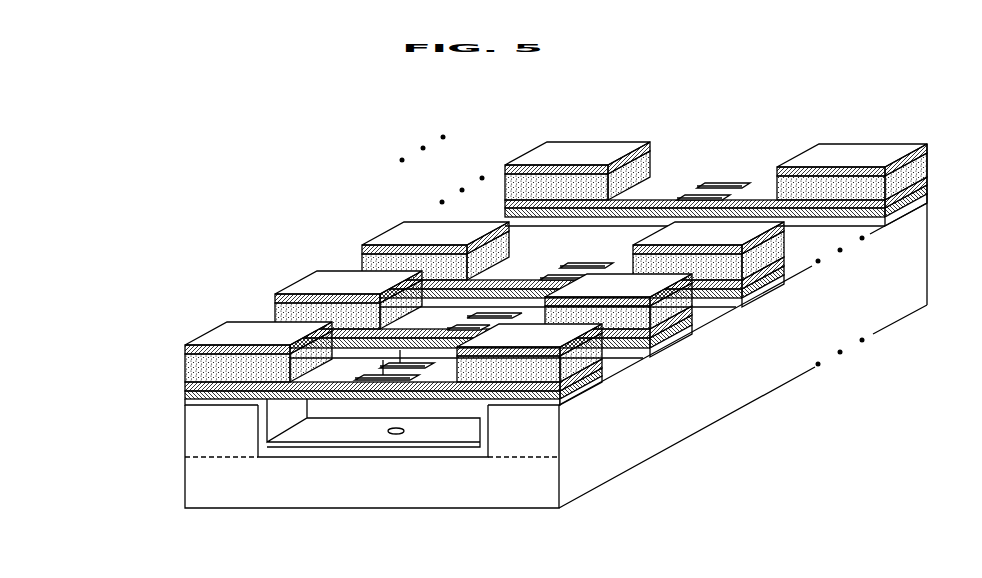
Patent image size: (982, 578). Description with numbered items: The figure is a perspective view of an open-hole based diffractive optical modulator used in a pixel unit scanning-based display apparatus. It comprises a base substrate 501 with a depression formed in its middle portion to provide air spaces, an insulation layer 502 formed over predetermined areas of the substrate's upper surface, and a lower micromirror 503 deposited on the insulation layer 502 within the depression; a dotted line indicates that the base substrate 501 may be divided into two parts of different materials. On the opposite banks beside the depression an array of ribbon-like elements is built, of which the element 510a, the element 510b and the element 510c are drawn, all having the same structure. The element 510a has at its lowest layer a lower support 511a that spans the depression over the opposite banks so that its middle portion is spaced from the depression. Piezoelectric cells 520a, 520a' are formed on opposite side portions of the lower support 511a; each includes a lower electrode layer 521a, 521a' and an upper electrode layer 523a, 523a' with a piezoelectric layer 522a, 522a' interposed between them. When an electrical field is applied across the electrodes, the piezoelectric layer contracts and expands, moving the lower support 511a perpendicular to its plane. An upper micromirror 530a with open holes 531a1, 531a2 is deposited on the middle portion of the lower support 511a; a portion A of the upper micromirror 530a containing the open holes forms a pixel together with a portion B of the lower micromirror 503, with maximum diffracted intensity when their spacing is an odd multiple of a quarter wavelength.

The base substrate 501 is at (556, 347).
The insulation layer 502 is at (425, 450).
The lower micromirror 503 is at (306, 447).
The element 510a is at (321, 352).
The element 510b is at (290, 282).
The element 510c is at (518, 163).
The lower support 511a is at (190, 395).
The piezoelectric cell 520a is at (221, 318).
The lower electrode layer 521a is at (342, 345).
The piezoelectric layer 522a is at (236, 332).
The upper electrode layer 523a is at (246, 310).
The upper micromirror 530a is at (290, 343).
The open hole 531a1 is at (360, 378).
The open hole 531a2 is at (413, 363).
The piezoelectric cell 520a' is at (612, 417).
The lower electrode layer 521a' is at (627, 432).
The piezoelectric layer 522a' is at (590, 409).
The upper electrode layer 523a' is at (603, 395).
The portion of the upper micromirror A is at (400, 360).
The portion of the lower micromirror B is at (396, 434).